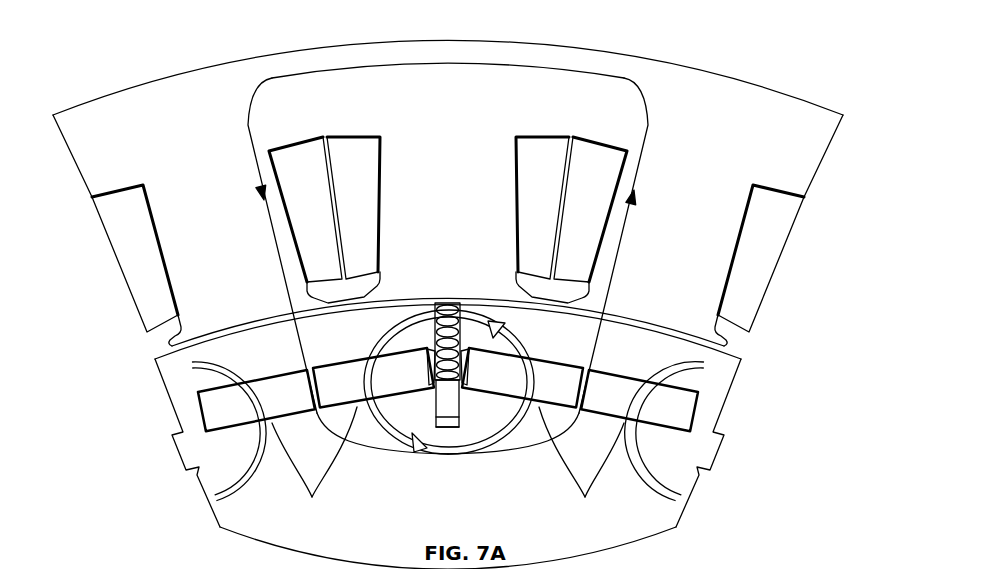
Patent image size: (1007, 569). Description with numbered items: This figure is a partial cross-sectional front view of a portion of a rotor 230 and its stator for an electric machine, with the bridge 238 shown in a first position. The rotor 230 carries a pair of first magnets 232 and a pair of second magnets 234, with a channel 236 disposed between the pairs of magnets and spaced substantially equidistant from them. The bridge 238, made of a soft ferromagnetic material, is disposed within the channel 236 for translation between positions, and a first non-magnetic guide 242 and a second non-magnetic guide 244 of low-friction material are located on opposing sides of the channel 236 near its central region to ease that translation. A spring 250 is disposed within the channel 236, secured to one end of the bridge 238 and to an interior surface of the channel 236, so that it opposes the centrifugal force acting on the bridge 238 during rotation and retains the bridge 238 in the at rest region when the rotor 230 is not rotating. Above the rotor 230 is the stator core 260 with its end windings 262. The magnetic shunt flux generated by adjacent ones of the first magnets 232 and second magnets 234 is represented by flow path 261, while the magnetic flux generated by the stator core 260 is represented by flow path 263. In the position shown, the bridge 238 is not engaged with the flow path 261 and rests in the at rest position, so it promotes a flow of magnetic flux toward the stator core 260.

The rotor 230 is at (690, 485).
The pair of first magnets 232 is at (312, 497).
The pair of second magnets 234 is at (585, 497).
The channel 236 is at (450, 428).
The bridge 238 is at (462, 404).
The first non-magnetic guide 242 is at (385, 355).
The second non-magnetic guide 244 is at (493, 367).
The spring 250 is at (452, 303).
The stator core 260 is at (717, 72).
The flow path 261 is at (210, 366).
The end windings 262 is at (130, 203).
The flow path 263 is at (475, 63).